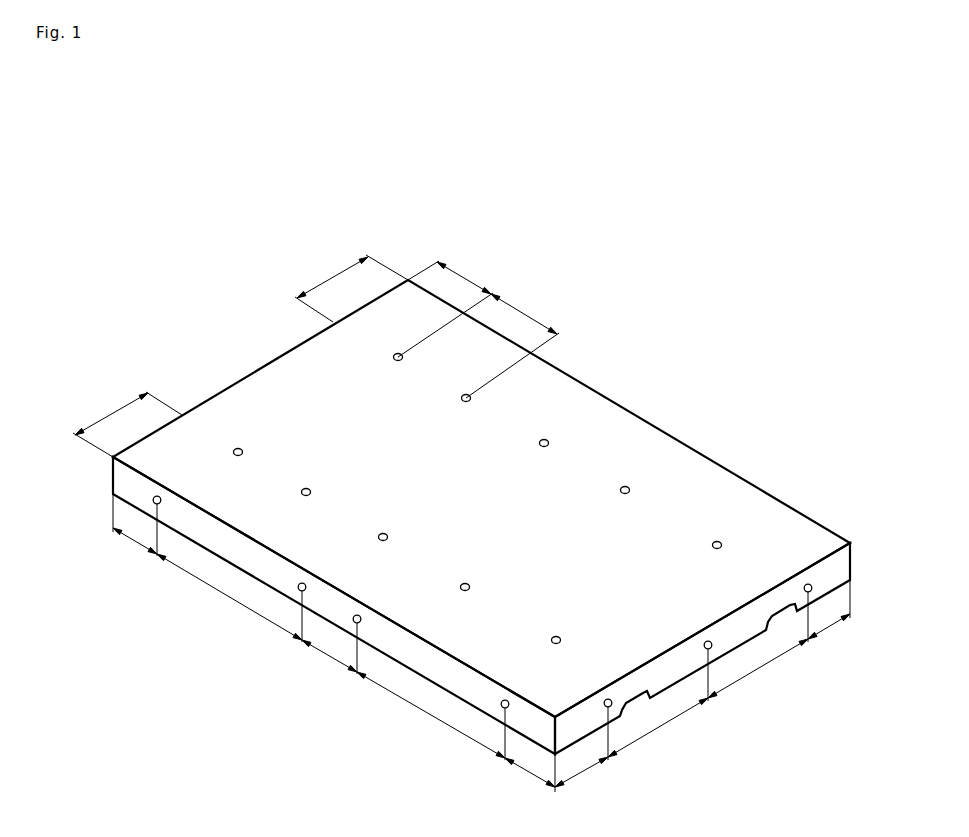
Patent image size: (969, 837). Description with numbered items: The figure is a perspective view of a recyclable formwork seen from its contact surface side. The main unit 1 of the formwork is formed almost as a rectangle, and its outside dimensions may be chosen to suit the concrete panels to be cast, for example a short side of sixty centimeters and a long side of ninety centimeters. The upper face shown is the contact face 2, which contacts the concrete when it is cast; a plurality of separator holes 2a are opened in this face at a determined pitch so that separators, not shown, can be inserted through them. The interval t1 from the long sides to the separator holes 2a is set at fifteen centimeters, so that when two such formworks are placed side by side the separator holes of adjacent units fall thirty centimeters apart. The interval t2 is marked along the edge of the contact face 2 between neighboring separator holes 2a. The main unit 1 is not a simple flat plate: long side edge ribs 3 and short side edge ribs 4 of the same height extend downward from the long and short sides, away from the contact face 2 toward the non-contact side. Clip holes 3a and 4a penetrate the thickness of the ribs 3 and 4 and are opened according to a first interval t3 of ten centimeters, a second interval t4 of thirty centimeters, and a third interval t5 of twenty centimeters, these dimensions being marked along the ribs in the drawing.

The main unit 1 is at (479, 517).
The contact face 2 is at (478, 440).
The separator holes 2a is at (548, 441).
The long side edge ribs 3 is at (227, 543).
The clip holes 3a is at (355, 622).
The short side edge ribs 4 is at (672, 667).
The clip holes 4a is at (715, 645).
The interval t1 is at (221, 346).
The dimension t2 is at (497, 298).
The first interval t3 is at (481, 657).
The second interval t4 is at (331, 656).
The third interval t5 is at (708, 698).